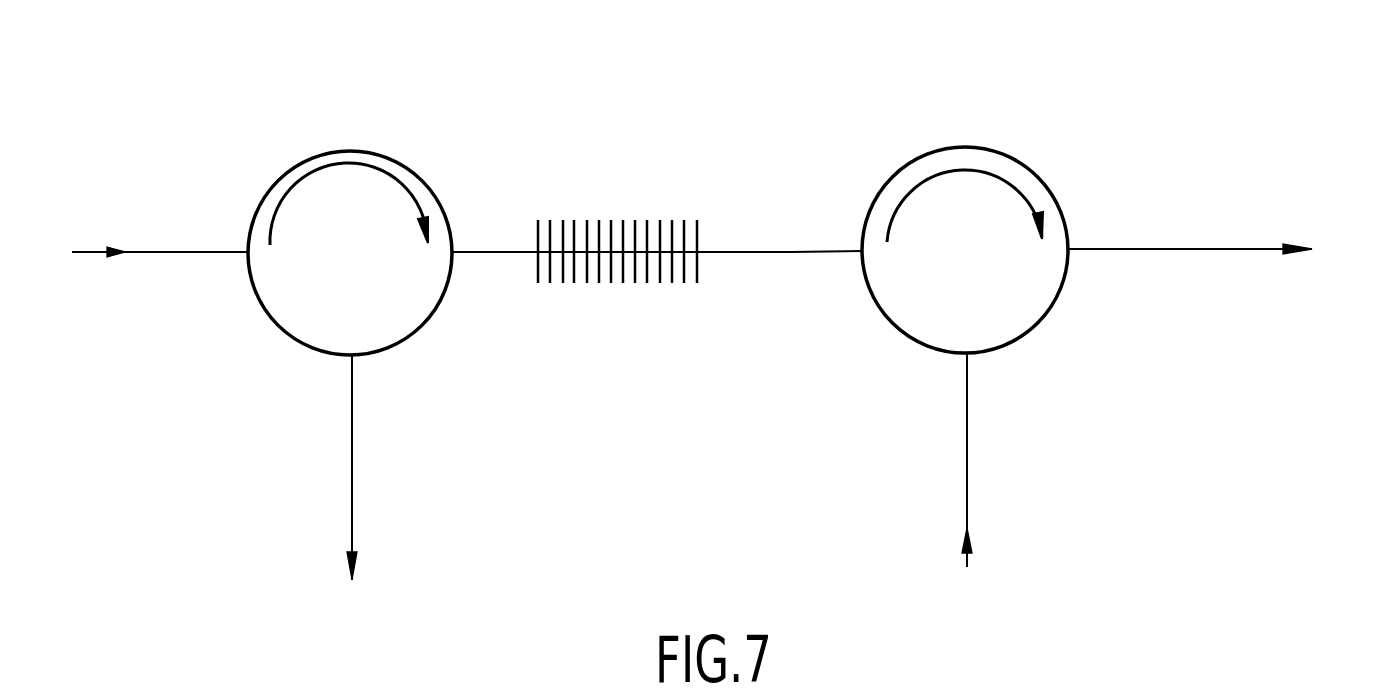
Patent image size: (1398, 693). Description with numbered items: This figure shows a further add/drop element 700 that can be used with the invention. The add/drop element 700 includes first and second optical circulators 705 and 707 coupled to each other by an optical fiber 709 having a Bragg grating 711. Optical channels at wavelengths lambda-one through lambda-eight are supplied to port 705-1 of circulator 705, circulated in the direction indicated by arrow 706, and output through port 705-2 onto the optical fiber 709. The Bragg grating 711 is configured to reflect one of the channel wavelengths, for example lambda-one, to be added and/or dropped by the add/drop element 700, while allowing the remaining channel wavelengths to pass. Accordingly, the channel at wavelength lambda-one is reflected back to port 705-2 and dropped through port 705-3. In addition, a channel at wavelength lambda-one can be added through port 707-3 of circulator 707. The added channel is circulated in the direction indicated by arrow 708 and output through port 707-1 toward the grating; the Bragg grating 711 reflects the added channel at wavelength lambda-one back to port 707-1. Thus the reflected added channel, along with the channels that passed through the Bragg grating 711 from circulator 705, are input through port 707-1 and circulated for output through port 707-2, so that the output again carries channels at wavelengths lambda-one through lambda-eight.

The add/drop element 700 is at (1112, 523).
The first optical circulator 705 is at (407, 167).
The port of circulator 705 705-1 is at (247, 250).
The port of circulator 705 705-2 is at (452, 255).
The port of circulator 705 705-3 is at (355, 355).
The arrow 706 is at (341, 175).
The second optical circulator 707 is at (992, 148).
The port of circulator 707 707-1 is at (860, 252).
The port of circulator 707 707-2 is at (1070, 249).
The port of circulator 707 707-3 is at (967, 352).
The arrow 708 is at (1020, 193).
The optical fiber 709 is at (792, 250).
The Bragg grating 711 is at (600, 232).